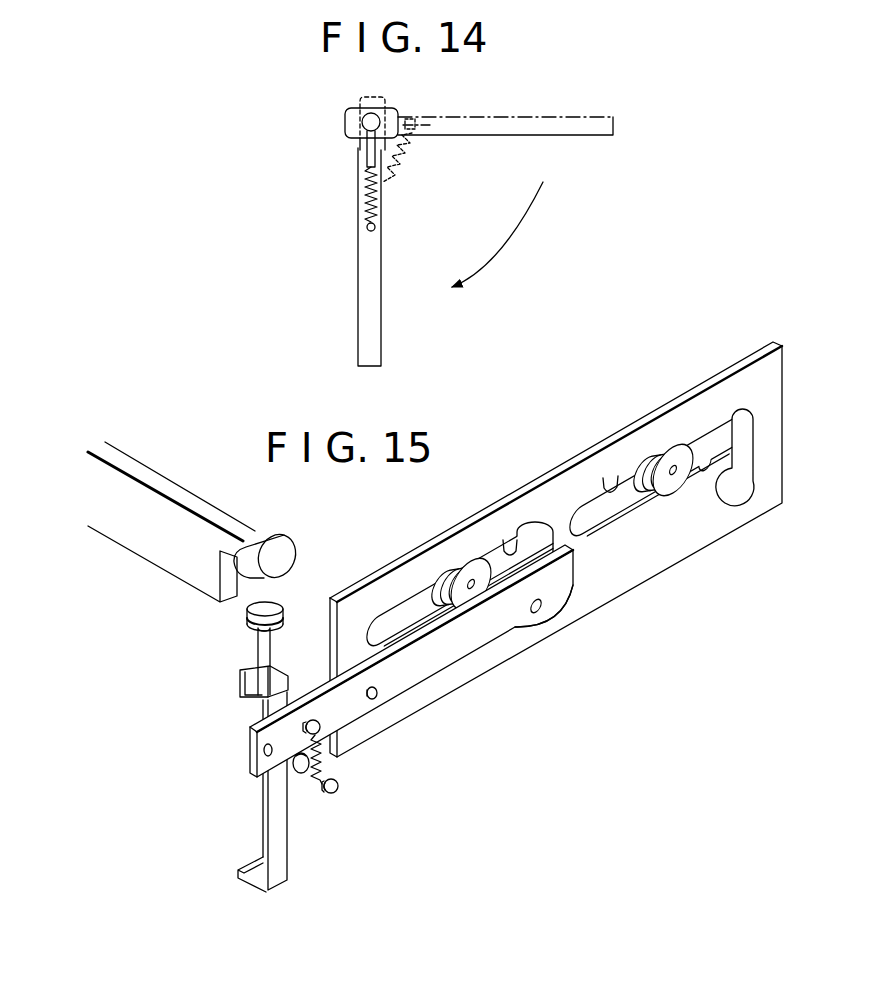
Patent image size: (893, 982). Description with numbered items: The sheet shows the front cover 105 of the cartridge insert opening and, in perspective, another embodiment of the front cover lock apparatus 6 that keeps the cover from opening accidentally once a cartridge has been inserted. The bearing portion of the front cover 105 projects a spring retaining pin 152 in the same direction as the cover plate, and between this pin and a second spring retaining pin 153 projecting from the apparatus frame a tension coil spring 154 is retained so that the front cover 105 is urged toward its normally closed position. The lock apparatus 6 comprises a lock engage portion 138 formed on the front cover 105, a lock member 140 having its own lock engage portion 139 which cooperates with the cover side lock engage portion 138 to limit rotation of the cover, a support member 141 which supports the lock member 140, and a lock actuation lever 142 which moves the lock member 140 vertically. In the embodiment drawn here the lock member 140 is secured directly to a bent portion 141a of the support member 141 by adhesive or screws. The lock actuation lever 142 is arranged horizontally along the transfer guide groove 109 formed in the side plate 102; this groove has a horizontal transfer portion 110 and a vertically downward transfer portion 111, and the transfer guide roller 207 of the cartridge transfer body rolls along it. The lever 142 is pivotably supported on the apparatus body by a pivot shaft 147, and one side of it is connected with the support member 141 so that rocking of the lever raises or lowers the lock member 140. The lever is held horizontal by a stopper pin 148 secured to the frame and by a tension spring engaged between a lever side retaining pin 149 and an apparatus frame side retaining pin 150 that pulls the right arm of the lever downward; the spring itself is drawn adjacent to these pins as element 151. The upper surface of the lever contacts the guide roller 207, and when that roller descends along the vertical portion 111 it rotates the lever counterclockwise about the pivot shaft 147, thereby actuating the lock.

In FIG. 14, the front cover 105 is at (365, 322).
In FIG. 15, the front cover 105 is at (168, 483).
In FIG. 14, the lock engage portion 138 is at (345, 123).
In FIG. 15, the lock engage portion 138 is at (270, 540).
In FIG. 14, the spring retaining pin 152 is at (372, 157).
In FIG. 14, the spring retaining pin 153 is at (367, 228).
In FIG. 14, the tension coil spring 154 is at (366, 193).
In FIG. 15, the horizontal transfer portion 110 is at (413, 612).
In FIG. 15, the transfer guide roller 207 is at (470, 563).
In FIG. 15, the transfer guide groove 109 is at (510, 543).
In FIG. 15, the side plate 102 is at (565, 483).
In FIG. 15, the vertically downward transfer portion 111 is at (540, 609).
In FIG. 15, the lock engage portion 139 is at (262, 607).
In FIG. 15, the lock member 140 is at (262, 644).
In FIG. 15, the support member 141 is at (263, 838).
In FIG. 15, the bent portion 141a is at (244, 696).
In FIG. 15, the front cover lock apparatus 6 is at (212, 750).
In FIG. 15, the lock actuation lever 142 is at (487, 638).
In FIG. 15, the pivot shaft 147 is at (378, 696).
In FIG. 15, the stopper pin 148 is at (302, 772).
In FIG. 15, the lever side retaining pin 149 is at (320, 729).
In FIG. 15, the apparatus frame side retaining pin 150 is at (337, 796).
In FIG. 15, the spring 151 is at (324, 768).